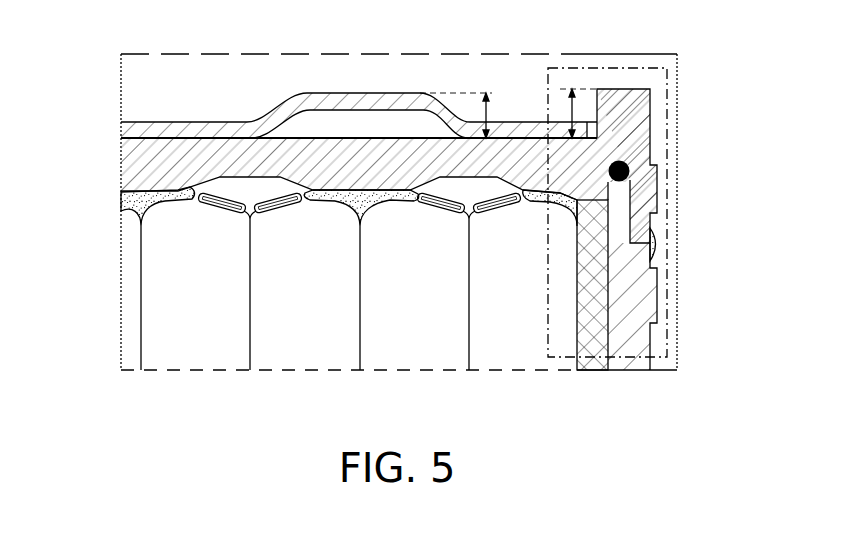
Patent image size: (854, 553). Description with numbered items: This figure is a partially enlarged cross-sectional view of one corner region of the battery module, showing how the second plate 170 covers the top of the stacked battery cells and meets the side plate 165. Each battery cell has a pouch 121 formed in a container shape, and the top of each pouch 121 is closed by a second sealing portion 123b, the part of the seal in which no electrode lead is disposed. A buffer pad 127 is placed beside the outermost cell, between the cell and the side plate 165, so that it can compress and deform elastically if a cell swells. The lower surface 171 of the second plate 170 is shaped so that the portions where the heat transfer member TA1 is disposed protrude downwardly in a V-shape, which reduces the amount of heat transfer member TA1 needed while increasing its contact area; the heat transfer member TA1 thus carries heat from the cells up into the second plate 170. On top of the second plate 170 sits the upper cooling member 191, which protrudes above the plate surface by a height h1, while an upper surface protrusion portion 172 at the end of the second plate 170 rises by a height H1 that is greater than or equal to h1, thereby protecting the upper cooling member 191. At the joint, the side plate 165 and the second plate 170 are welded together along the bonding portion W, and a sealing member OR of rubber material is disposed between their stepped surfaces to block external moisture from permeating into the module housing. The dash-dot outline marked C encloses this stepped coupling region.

The pouch 121 is at (200, 335).
The second sealing portion 123b is at (264, 198).
The buffer pad 127 is at (598, 335).
The side plate 165 is at (630, 333).
The second plate 170 is at (140, 158).
The lower surface 171 is at (441, 185).
The upper surface protrusion portion 172 is at (630, 113).
The upper cooling member 191 is at (357, 92).
The sealing member OR is at (624, 160).
The bonding portion W is at (657, 248).
The heat transfer member TA1 is at (141, 203).
The height h1 is at (484, 112).
The height H1 is at (570, 110).
The region C is at (632, 68).